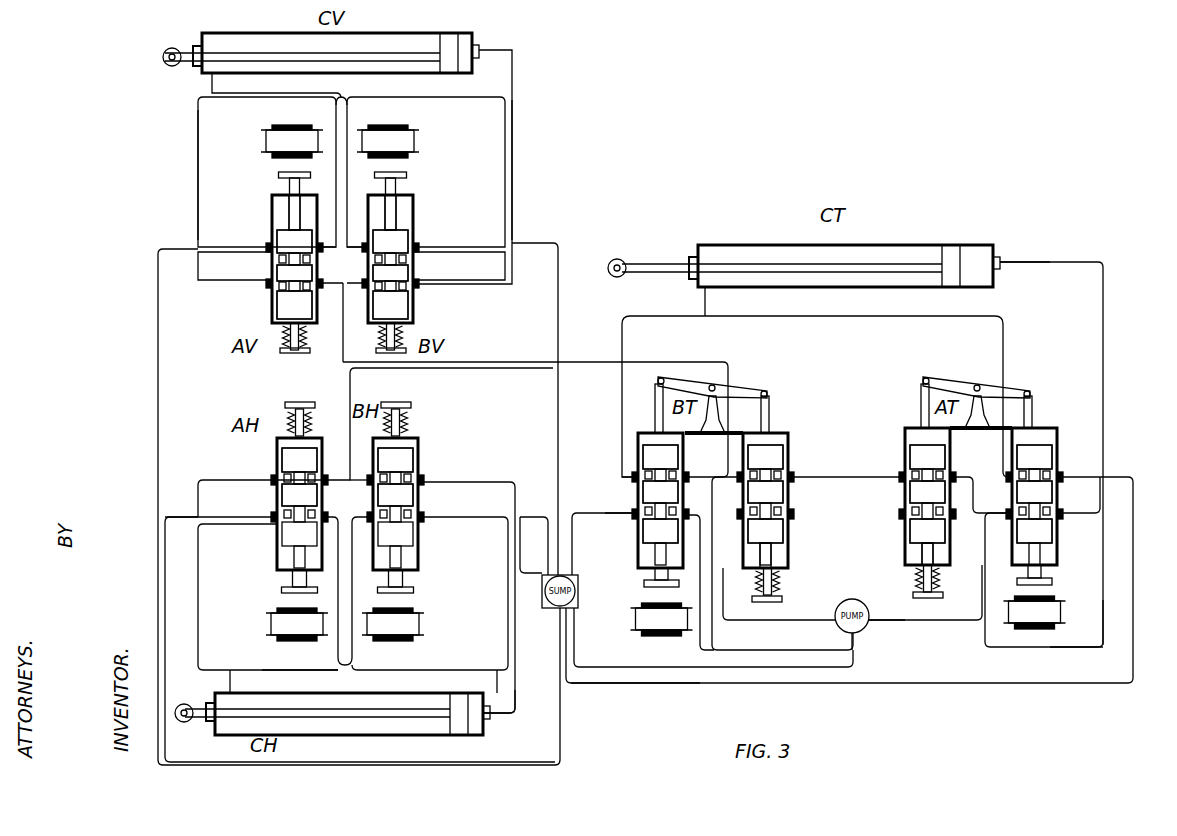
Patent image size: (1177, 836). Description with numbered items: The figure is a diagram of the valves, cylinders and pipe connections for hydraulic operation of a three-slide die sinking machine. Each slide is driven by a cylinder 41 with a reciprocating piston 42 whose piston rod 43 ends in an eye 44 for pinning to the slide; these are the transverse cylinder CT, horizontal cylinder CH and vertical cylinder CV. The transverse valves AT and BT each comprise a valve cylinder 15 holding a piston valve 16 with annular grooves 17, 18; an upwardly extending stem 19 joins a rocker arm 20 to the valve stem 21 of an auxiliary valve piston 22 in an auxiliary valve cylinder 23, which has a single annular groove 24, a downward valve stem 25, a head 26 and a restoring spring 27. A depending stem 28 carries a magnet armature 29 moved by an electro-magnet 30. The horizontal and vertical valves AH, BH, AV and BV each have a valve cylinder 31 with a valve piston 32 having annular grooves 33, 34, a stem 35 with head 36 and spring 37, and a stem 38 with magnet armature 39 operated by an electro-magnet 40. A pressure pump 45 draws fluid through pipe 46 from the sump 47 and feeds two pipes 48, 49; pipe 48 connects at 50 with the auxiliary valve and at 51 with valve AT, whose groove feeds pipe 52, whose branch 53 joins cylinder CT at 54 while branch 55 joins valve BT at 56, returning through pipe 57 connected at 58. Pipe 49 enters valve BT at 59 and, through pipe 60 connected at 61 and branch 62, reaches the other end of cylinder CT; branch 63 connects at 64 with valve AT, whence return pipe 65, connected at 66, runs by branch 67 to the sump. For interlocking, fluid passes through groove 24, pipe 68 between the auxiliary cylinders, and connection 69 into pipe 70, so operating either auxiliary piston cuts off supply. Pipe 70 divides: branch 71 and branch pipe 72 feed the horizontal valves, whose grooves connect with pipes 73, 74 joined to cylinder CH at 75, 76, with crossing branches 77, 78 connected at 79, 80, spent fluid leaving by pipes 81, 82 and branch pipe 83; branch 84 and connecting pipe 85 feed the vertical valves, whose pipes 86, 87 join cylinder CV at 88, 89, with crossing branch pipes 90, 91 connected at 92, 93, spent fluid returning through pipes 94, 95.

The valve cylinder 15 is at (652, 432).
The piston valve 16 is at (675, 512).
The annular groove 17 is at (642, 457).
The annular groove 18 is at (642, 495).
The upwardly extending stem 19 is at (655, 395).
The rocker arm 20 is at (730, 385).
The valve stem 21 is at (770, 400).
The auxiliary valve piston 22 is at (780, 440).
The auxiliary valve cylinder 23 is at (945, 535).
The annular groove 24 is at (785, 465).
The valve stem 25 is at (772, 550).
The head 26 is at (760, 603).
The spring 27 is at (782, 575).
The depending stem 28 is at (668, 575).
The magnet armature 29 is at (644, 583).
The electro-magnet 30 is at (634, 615).
The valve cylinder 31 is at (405, 240).
The valve piston 32 is at (278, 240).
The annular groove 33 is at (280, 300).
The annular groove 34 is at (280, 270).
The stem 35 is at (378, 350).
The head 36 is at (410, 402).
The spring 37 is at (408, 425).
The stem 38 is at (290, 210).
The magnet armature 39 is at (280, 177).
The electro-magnet 40 is at (268, 143).
The cylinder 41 is at (240, 33).
The reciprocating piston 42 is at (446, 45).
The piston rod 43 is at (300, 52).
The eye 44 is at (163, 56).
The pressure pump 45 is at (900, 618).
The pipe 46 is at (795, 667).
The sump 47 is at (530, 545).
The pipe 48 is at (855, 645).
The pipe 49 is at (832, 618).
The connection 50 is at (950, 470).
The connection 51 is at (986, 600).
The pipe 52 is at (1055, 530).
The branch 53 is at (1104, 370).
The connection 54 is at (1010, 260).
The branch 55 is at (1105, 630).
The connection 56 is at (714, 500).
The pipe 57 is at (572, 545).
The connection 58 is at (628, 516).
The connection 59 is at (690, 470).
The pipe 60 is at (622, 405).
The connection 61 is at (636, 478).
The branch 62 is at (712, 305).
The branch 63 is at (795, 318).
The connection 64 is at (1060, 508).
The pipe 65 is at (1133, 555).
The connection 66 is at (1090, 477).
The branch 67 is at (566, 640).
The pipe 68 is at (870, 478).
The connection 69 is at (679, 419).
The pipe 70 is at (585, 362).
The branch 71 is at (350, 380).
The branch pipe 72 is at (359, 458).
The pipe 73 is at (512, 480).
The pipe 74 is at (200, 482).
The connection 75 is at (515, 710).
The connection 76 is at (230, 680).
The branch 77 is at (498, 678).
The branch 78 is at (290, 670).
The connection 79 is at (347, 572).
The connection 80 is at (420, 522).
The pipe 81 is at (546, 514).
The pipe 82 is at (175, 518).
The branch pipe 83 is at (165, 600).
The branch 84 is at (340, 325).
The connecting pipe 85 is at (342, 266).
The pipe 86 is at (198, 178).
The pipe 87 is at (514, 150).
The connection 88 is at (212, 90).
The connection 89 is at (480, 48).
The branch pipe 90 is at (258, 100).
The branch pipe 91 is at (440, 98).
The connection 92 is at (360, 230).
The connection 93 is at (328, 230).
The pipe 94 is at (158, 330).
The pipe 95 is at (558, 243).